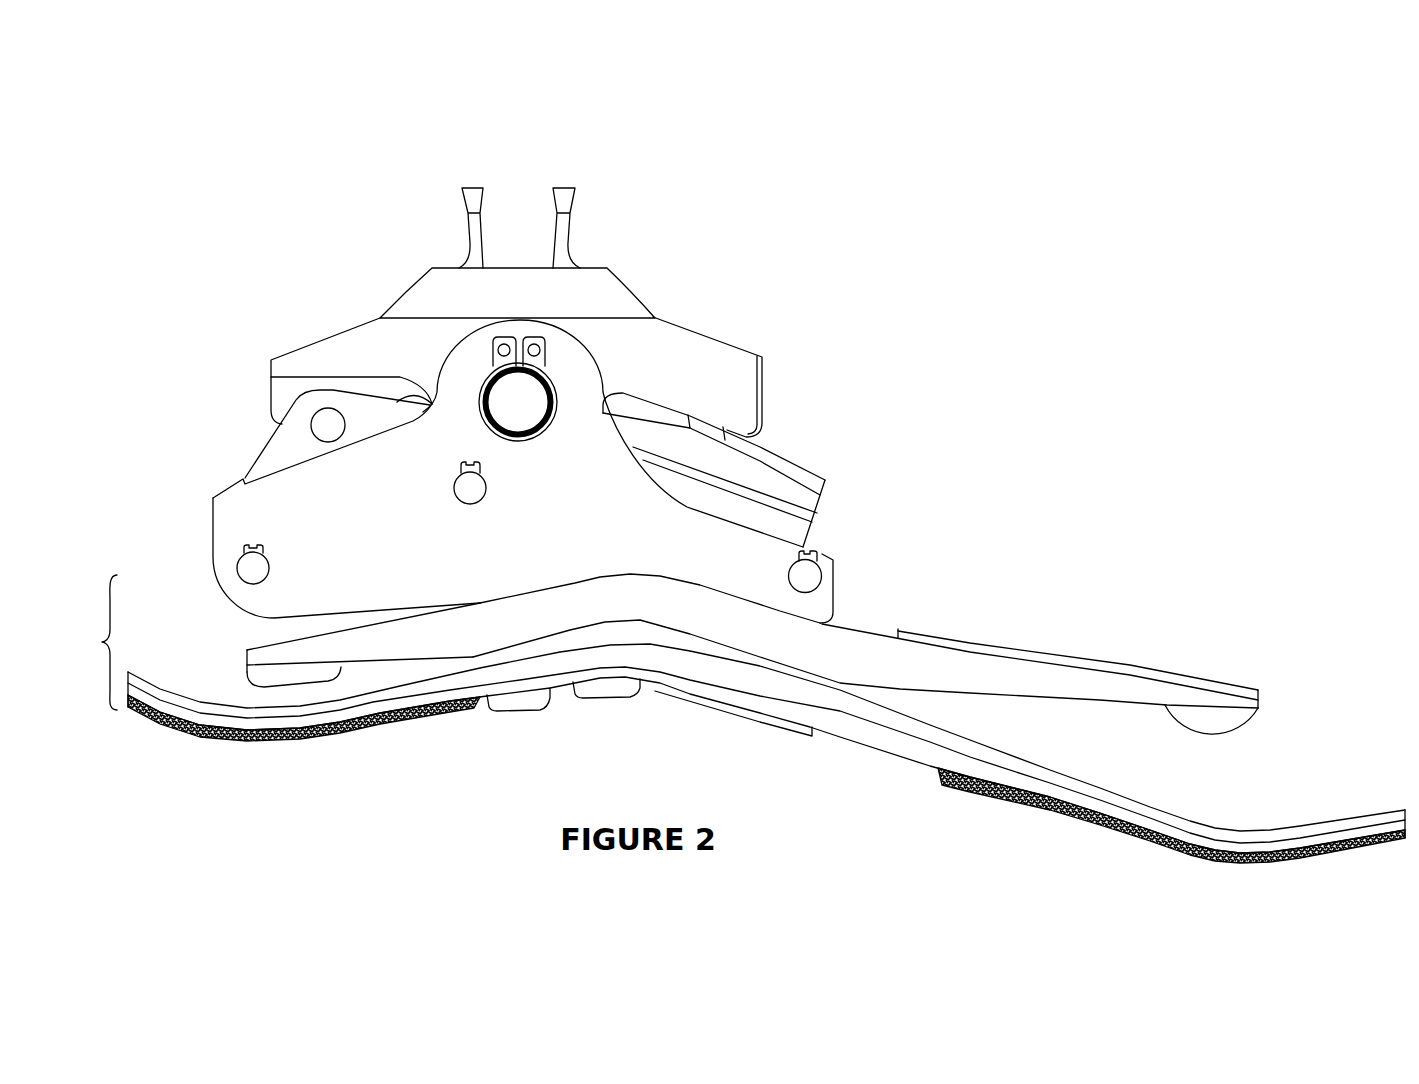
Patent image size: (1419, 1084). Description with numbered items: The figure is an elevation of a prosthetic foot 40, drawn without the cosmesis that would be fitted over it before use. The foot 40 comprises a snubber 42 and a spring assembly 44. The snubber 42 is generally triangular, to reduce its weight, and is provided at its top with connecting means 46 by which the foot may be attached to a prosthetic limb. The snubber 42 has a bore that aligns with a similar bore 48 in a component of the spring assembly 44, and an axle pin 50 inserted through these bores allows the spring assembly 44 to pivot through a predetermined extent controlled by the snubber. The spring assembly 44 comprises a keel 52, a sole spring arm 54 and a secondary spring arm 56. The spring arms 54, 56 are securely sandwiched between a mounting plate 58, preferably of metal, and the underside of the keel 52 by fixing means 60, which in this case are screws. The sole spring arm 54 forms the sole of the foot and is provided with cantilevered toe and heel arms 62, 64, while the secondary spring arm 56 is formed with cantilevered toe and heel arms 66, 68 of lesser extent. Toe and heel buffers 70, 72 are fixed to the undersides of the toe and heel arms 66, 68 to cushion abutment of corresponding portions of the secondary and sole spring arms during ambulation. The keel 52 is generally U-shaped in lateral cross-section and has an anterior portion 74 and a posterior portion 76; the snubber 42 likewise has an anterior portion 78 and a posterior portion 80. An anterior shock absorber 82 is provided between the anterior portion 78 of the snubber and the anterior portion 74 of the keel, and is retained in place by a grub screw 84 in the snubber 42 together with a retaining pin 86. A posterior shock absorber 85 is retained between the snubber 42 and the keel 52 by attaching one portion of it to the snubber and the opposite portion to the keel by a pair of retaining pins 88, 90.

The prosthetic foot 40 is at (267, 301).
The snubber 42 is at (417, 296).
The spring assembly 44 is at (93, 642).
The connecting means 46 is at (496, 193).
The bore 48 is at (480, 385).
The axle pin 50 is at (540, 397).
The keel 52 is at (216, 587).
The sole spring arm 54 is at (862, 740).
The secondary spring arm 56 is at (997, 649).
The mounting plate 58 is at (765, 718).
The fixing means 60 is at (592, 697).
The toe arm 62 is at (1330, 852).
The heel arm 64 is at (187, 727).
The toe arm 66 is at (1182, 692).
The heel arm 68 is at (253, 657).
The toe buffer 70 is at (1220, 725).
The heel buffer 72 is at (258, 678).
The anterior portion 74 is at (845, 602).
The posterior portion 76 is at (233, 464).
The anterior portion 78 is at (711, 325).
The posterior portion 80 is at (283, 344).
The anterior shock absorber 82 is at (823, 497).
The grub screw 84 is at (713, 431).
The posterior shock absorber 85 is at (274, 456).
The retaining pin 86 is at (816, 578).
The retaining pin 88 is at (241, 556).
The retaining pin 90 is at (470, 493).